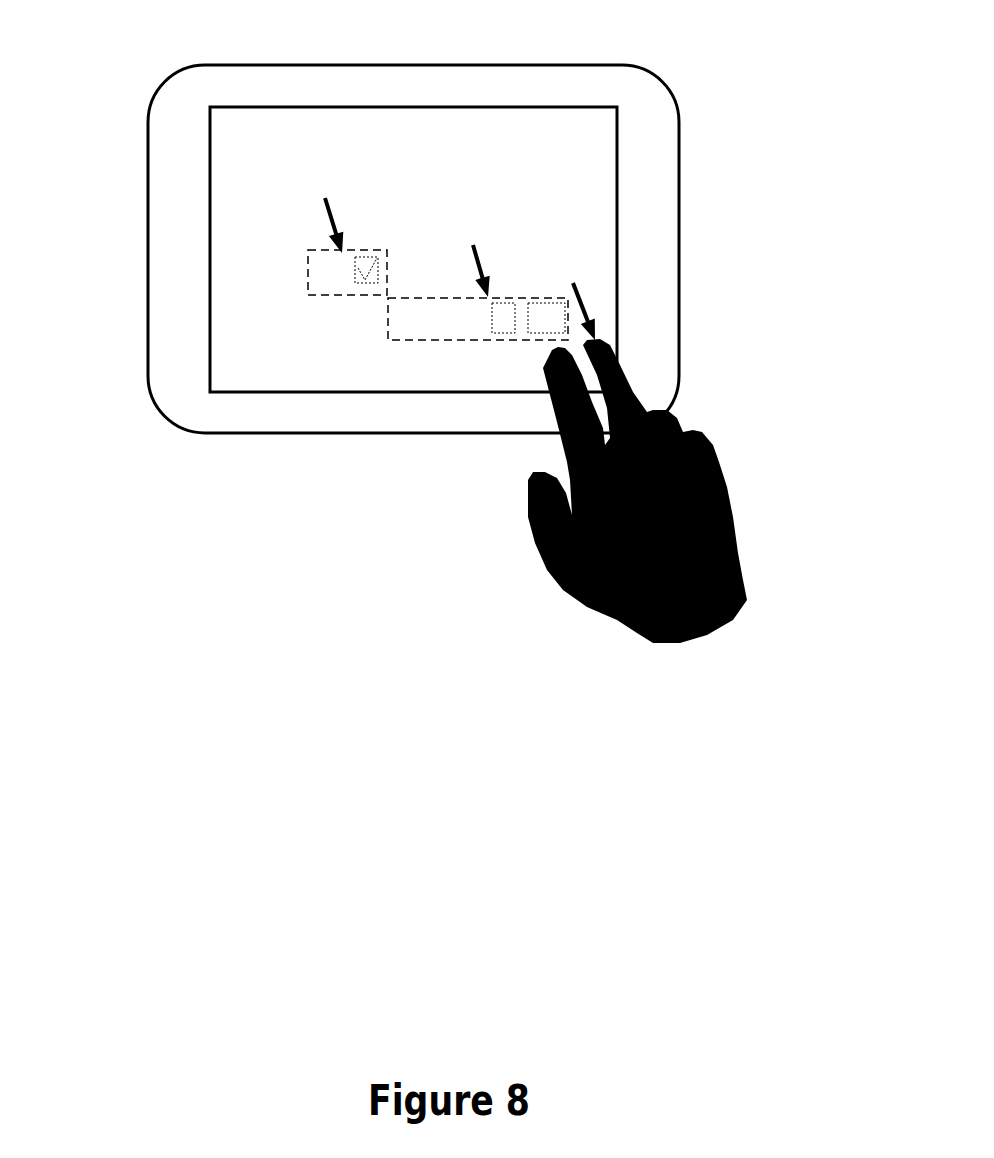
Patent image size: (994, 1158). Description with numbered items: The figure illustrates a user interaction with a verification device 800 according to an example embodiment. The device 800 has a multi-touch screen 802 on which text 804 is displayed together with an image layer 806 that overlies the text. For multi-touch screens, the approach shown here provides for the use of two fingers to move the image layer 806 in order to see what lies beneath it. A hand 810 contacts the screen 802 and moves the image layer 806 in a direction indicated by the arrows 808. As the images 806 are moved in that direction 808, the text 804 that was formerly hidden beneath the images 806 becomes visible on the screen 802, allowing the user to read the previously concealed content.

The device 800 is at (148, 145).
The multi-touch screen 802 is at (210, 228).
The text 804 is at (382, 102).
The image layer 806 is at (310, 293).
The arrows 808 is at (327, 205).
The hand 810 is at (742, 484).